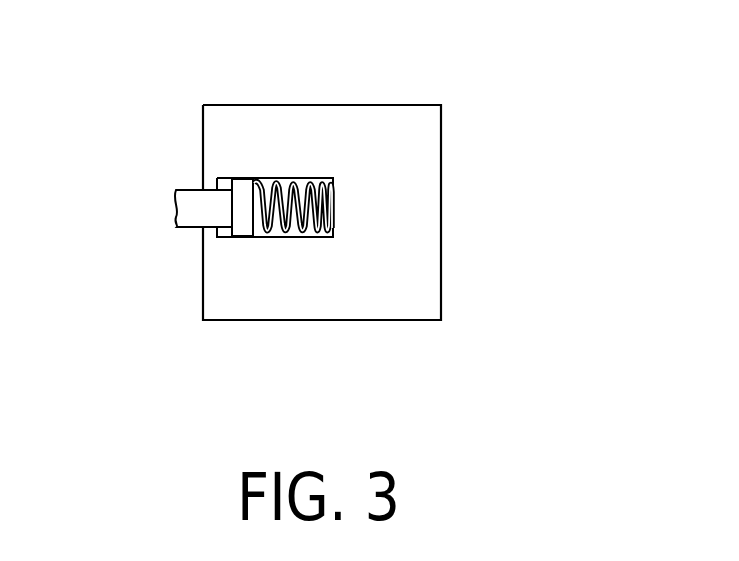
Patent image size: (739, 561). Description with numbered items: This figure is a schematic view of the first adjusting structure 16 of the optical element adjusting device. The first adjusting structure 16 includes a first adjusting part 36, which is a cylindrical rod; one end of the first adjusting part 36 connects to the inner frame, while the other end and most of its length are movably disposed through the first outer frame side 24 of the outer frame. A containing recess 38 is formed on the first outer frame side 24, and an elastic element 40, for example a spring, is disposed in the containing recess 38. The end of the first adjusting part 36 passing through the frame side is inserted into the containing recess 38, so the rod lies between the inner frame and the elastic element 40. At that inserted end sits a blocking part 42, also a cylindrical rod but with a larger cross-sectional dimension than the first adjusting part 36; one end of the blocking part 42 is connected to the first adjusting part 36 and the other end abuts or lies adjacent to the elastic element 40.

The first adjusting structure 16 is at (133, 187).
The first outer frame side 24 is at (228, 282).
The first adjusting part 36 is at (192, 203).
The containing recess 38 is at (302, 188).
The elastic element 40 is at (295, 237).
The blocking part 42 is at (243, 193).